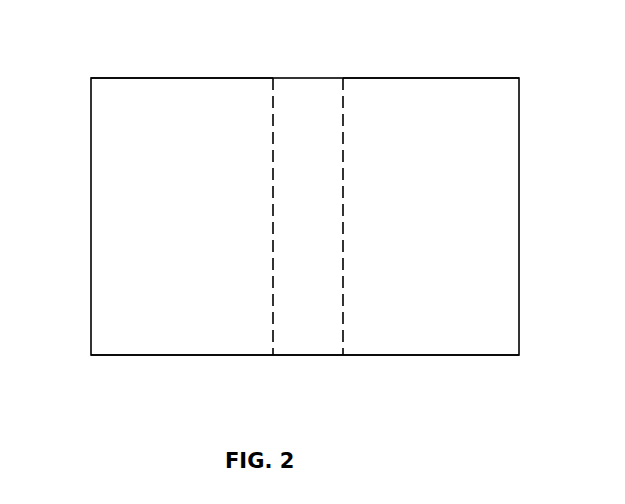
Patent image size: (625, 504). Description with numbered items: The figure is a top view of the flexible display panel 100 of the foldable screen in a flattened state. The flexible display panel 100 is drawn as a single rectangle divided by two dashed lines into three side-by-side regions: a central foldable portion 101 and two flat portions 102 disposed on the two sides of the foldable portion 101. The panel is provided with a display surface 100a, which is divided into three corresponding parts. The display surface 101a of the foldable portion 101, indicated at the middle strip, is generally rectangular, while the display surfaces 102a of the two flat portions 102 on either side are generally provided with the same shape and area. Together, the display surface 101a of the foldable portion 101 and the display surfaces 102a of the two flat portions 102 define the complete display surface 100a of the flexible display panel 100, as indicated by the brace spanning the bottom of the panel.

The flexible display panel 100 is at (48, 33).
The foldable portion 101 is at (305, 102).
The flat portion 102 is at (203, 102).
The display surface 100a is at (467, 391).
The display surface of the foldable portion 101a is at (294, 341).
The display surface of the flat portion 102a is at (135, 340).